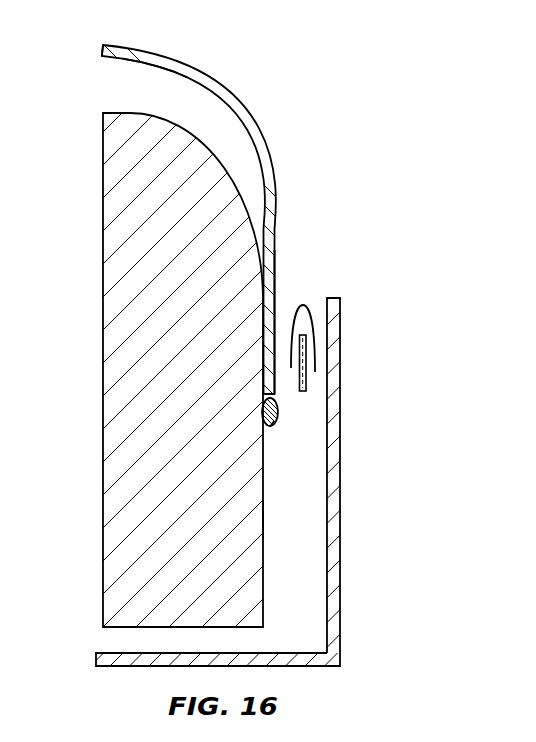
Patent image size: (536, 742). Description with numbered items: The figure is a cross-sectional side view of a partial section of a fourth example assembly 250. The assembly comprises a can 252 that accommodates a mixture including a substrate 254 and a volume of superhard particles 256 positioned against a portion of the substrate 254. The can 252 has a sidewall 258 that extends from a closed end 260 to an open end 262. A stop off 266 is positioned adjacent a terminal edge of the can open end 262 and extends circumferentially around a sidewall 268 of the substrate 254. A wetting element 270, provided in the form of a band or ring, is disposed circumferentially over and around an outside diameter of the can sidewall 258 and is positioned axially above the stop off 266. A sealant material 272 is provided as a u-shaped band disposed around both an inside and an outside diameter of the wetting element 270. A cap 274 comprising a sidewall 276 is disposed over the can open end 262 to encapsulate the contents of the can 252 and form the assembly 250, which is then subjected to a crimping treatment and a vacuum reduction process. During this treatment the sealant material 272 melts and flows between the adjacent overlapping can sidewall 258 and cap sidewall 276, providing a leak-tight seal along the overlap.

The fourth example assembly 250 is at (350, 62).
The can 252 is at (223, 90).
The substrate 254 is at (130, 225).
The volume of superhard particles 256 is at (163, 97).
The sidewall 258 is at (275, 273).
The closed end 260 is at (112, 46).
The open end 262 is at (278, 413).
The stop off 266 is at (277, 422).
The sidewall 268 is at (265, 520).
The wetting element 270 is at (316, 365).
The sealant material 272 is at (313, 298).
The cap 274 is at (340, 617).
The sidewall 276 is at (340, 552).